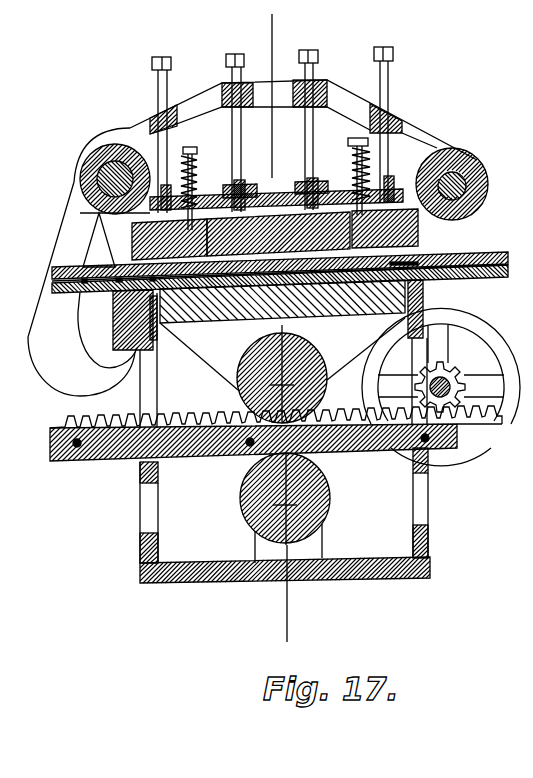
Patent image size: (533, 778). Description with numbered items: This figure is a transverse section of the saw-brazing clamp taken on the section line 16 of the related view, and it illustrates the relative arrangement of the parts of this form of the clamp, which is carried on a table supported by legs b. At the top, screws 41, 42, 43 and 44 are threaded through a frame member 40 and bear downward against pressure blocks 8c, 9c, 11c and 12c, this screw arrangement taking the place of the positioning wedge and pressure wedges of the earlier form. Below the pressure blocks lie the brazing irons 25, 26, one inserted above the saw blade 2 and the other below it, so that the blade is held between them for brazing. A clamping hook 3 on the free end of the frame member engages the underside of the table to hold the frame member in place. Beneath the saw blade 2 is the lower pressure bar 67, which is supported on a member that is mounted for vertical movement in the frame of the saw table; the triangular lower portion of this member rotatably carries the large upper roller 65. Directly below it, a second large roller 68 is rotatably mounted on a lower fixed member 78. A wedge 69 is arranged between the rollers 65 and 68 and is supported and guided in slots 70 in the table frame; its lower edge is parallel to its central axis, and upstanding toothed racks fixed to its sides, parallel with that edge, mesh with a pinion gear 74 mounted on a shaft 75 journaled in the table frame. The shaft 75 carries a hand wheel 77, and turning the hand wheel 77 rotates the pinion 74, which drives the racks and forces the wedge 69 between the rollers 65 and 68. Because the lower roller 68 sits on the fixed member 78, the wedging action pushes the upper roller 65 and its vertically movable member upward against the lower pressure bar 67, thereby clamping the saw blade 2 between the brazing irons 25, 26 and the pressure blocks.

The section line 16— 16 is at (266, 20).
The screw 41 is at (160, 80).
The screw 42 is at (233, 70).
The screw 43 is at (315, 66).
The screw 44 is at (389, 82).
The frame member 40 is at (428, 141).
The pressure block 11c is at (256, 213).
The pressure block 12c is at (331, 207).
The pressure block 8c is at (132, 235).
The pressure block 9c is at (408, 236).
The brazing iron 25 is at (490, 254).
The brazing iron 26 is at (498, 273).
The clamping hook 3 is at (45, 313).
The saw blade 2 is at (233, 273).
The lower pressure bar 67 is at (255, 307).
The upper roller 65 is at (238, 388).
The lower roller 68 is at (328, 498).
The lower fixed member 78 is at (312, 549).
The hand wheel 77 is at (498, 341).
The pinion gear 74 is at (453, 372).
The shaft 75 is at (428, 378).
The wedge 69 is at (98, 462).
The slot 70 is at (142, 462).
The leg b is at (145, 543).